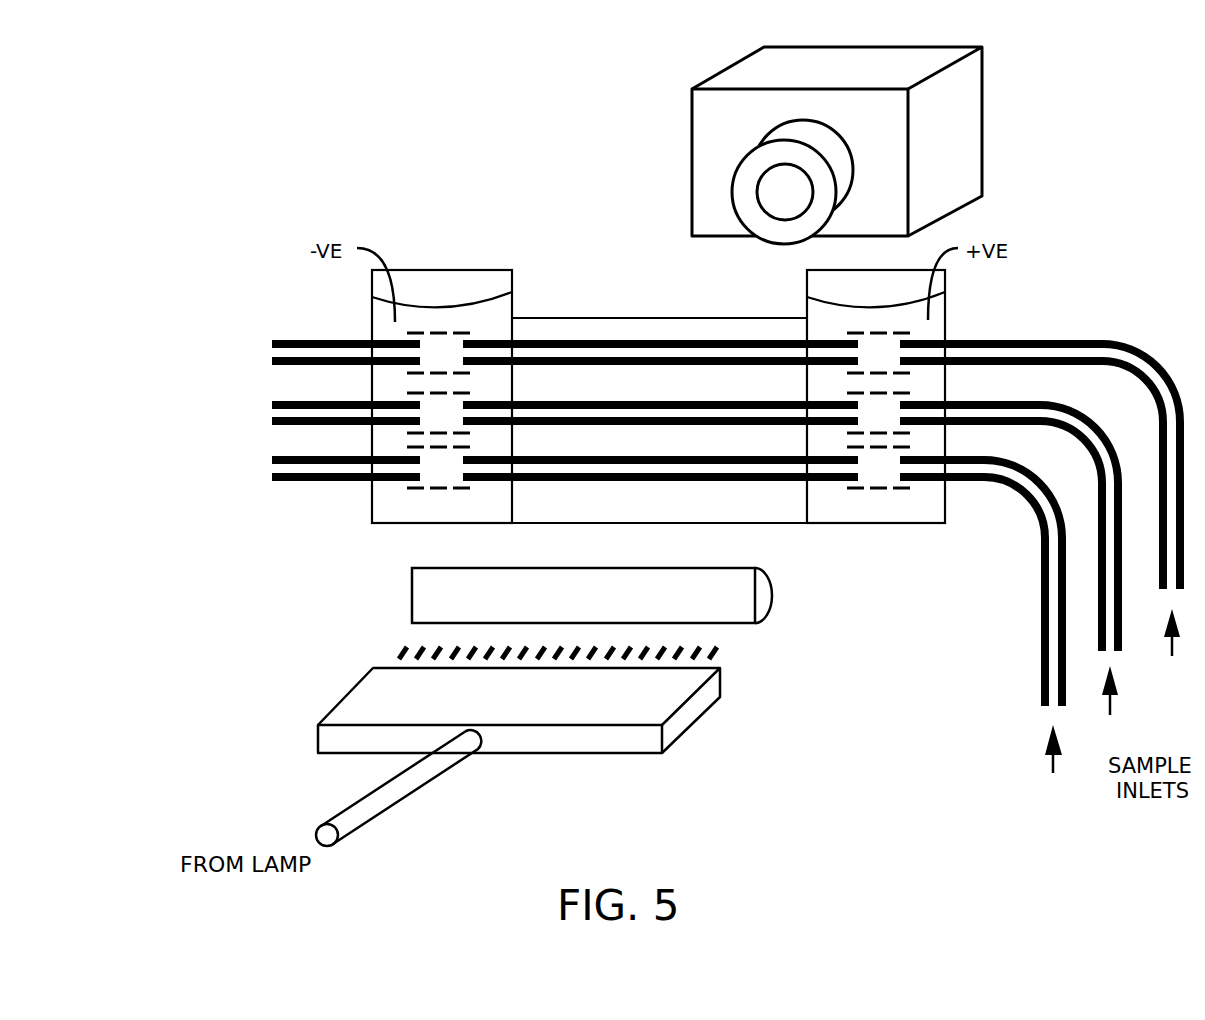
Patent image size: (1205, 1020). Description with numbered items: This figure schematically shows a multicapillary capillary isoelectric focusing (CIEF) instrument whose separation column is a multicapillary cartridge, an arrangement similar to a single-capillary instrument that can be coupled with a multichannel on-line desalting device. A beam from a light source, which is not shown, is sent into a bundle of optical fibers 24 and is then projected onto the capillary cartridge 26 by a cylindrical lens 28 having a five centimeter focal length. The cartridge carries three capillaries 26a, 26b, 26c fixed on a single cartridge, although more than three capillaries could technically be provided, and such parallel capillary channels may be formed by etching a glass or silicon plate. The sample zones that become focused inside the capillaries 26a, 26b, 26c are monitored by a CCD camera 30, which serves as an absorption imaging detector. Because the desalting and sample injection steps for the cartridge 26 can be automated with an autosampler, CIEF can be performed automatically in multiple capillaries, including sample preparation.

The bundle of optical fibers 24 is at (683, 713).
The capillary cartridge 26 is at (595, 327).
The capillary 26a is at (692, 338).
The capillary 26b is at (603, 423).
The capillary 26c is at (700, 478).
The cylindrical lens 28 is at (740, 617).
The CCD camera 30 is at (982, 148).